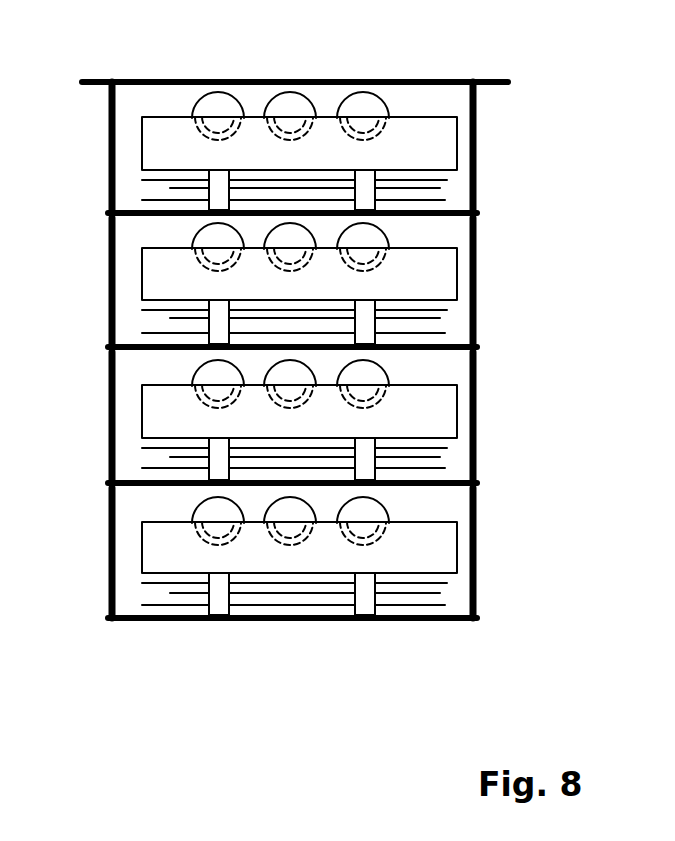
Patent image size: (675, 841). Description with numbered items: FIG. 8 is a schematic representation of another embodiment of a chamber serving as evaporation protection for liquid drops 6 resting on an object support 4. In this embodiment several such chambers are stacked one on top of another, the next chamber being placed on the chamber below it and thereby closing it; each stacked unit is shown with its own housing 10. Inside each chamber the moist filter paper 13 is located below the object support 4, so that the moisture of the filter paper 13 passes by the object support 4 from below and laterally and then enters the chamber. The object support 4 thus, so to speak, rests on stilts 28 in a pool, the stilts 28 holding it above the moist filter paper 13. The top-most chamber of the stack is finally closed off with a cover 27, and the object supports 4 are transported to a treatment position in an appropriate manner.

The object support 4 is at (152, 158).
The liquid drops 6 is at (289, 97).
The shelf housing 10 is at (476, 181).
The moist filter paper 13 is at (160, 315).
The cover 27 is at (418, 79).
The stilts 28 is at (363, 606).